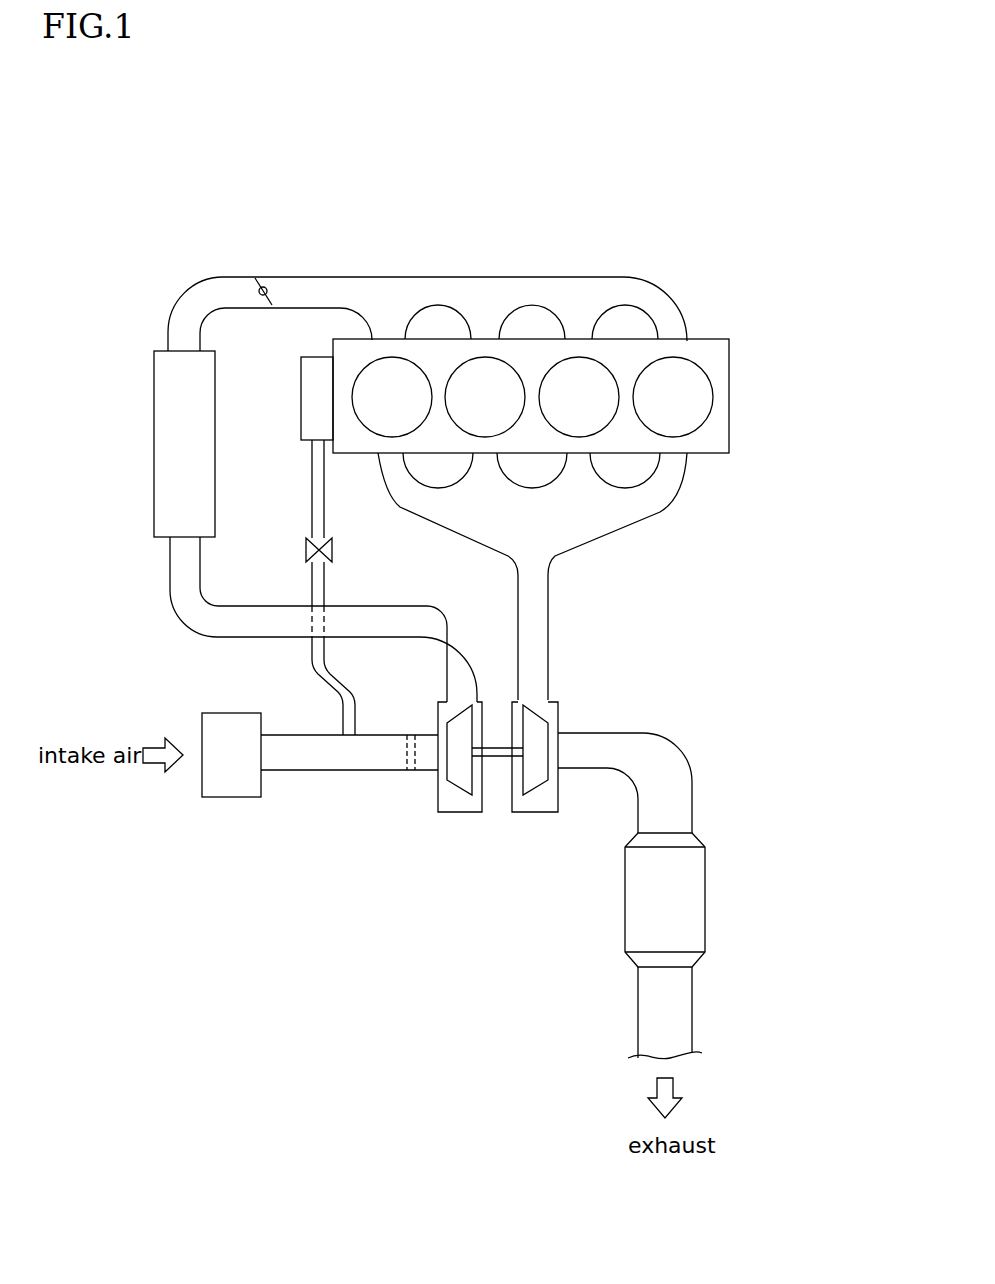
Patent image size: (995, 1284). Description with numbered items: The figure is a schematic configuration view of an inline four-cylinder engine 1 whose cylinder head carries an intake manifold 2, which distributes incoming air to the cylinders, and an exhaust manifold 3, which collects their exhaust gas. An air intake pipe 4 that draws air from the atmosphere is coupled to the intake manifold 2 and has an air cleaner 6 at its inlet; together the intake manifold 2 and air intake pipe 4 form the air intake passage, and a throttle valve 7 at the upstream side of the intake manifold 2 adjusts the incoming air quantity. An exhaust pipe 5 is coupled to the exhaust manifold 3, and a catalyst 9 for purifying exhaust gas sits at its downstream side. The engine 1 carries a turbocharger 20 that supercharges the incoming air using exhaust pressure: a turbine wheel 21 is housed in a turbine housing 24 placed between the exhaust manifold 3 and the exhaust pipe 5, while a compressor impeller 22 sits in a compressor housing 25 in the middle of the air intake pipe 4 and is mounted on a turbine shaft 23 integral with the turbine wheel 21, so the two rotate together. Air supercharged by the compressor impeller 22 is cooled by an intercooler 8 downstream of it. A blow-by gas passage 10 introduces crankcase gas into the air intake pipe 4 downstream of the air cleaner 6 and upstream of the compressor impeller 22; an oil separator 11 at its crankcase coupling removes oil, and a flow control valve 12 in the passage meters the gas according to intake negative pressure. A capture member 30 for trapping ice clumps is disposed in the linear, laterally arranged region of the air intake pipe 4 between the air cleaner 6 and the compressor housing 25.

The engine 1 is at (732, 363).
The intake manifold 2 is at (503, 277).
The exhaust manifold 3 is at (633, 523).
The air intake pipe 4 is at (368, 637).
The exhaust pipe 5 is at (625, 732).
The air cleaner 6 is at (220, 713).
The throttle valve 7 is at (263, 278).
The intercooler 8 is at (153, 437).
The catalyst 9 is at (683, 887).
The blow-by gas passage 10 is at (313, 590).
The oil separator 11 is at (301, 395).
The flow control valve 12 is at (306, 550).
The turbocharger 20 is at (493, 845).
The turbine wheel 21 is at (532, 780).
The compressor impeller 22 is at (458, 780).
The turbine shaft 23 is at (497, 756).
The turbine housing 24 is at (560, 790).
The compressor housing 25 is at (438, 790).
The capture member 30 is at (402, 757).